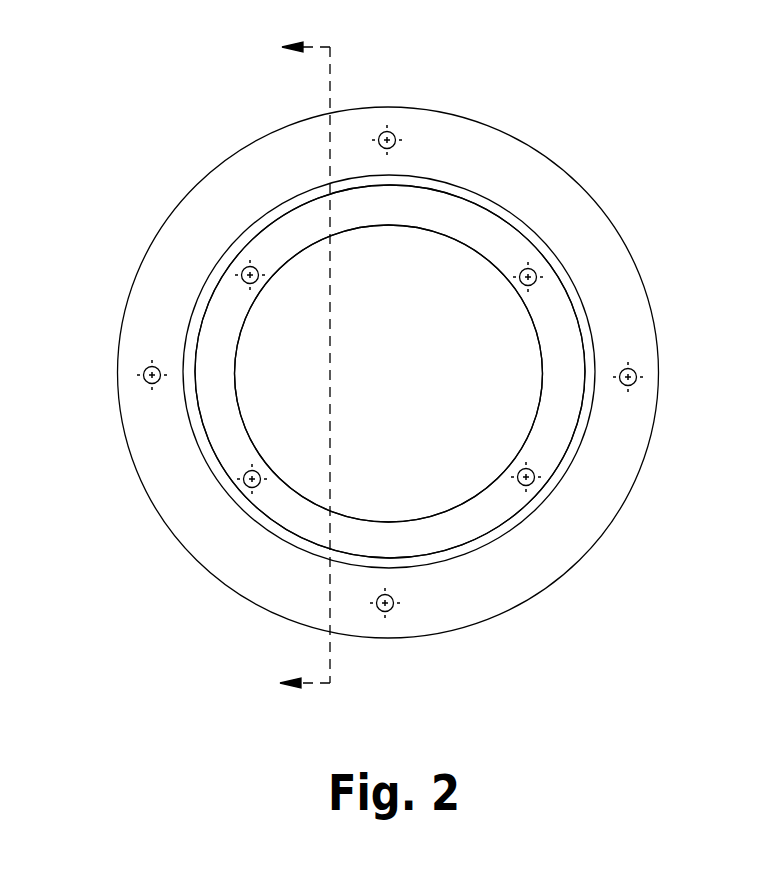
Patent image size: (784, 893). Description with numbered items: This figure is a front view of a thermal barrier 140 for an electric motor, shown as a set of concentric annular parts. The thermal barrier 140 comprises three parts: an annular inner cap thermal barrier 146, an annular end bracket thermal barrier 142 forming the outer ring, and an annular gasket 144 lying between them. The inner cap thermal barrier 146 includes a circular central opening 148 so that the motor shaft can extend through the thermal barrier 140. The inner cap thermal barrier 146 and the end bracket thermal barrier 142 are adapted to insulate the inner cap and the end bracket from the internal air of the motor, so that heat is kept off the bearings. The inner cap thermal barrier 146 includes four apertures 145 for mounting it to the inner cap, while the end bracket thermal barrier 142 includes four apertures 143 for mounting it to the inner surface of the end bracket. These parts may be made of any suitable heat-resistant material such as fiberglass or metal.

The thermal barrier 140 is at (555, 75).
The end bracket thermal barrier 142 is at (612, 268).
The apertures 143 is at (635, 371).
The gasket 144 is at (555, 268).
The apertures 145 is at (243, 268).
The inner cap thermal barrier 146 is at (490, 232).
The central opening 148 is at (403, 388).